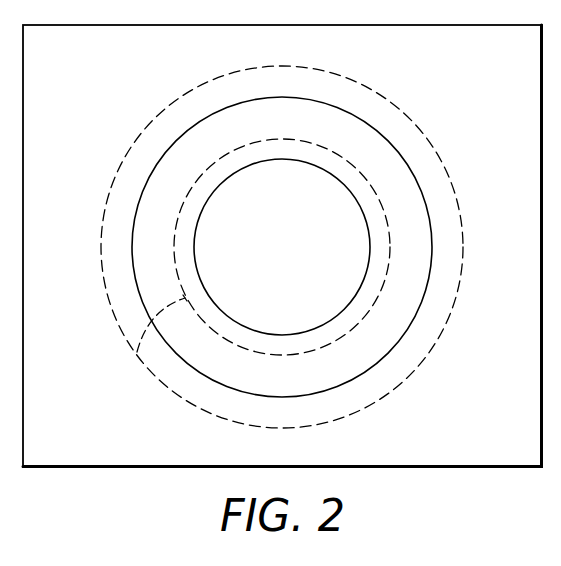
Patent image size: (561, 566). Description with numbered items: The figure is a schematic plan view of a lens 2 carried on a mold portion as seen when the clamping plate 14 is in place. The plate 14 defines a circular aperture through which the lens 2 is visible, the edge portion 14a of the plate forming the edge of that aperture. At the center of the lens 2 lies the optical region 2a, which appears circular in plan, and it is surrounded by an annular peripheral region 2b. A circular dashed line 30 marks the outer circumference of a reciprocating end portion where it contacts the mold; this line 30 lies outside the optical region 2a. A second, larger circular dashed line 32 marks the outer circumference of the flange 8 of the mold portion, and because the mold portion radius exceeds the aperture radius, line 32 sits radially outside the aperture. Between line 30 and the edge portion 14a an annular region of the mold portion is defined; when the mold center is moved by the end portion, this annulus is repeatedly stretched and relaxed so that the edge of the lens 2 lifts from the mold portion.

The lens 2 is at (400, 180).
The optical region 2a is at (296, 258).
The annular peripheral region 2b is at (179, 201).
The flange 8 is at (125, 258).
The clamping plate 14 is at (519, 64).
The edge portion 14a is at (403, 335).
The circular dashed line 30 is at (137, 352).
The circular dashed line 32 is at (172, 105).